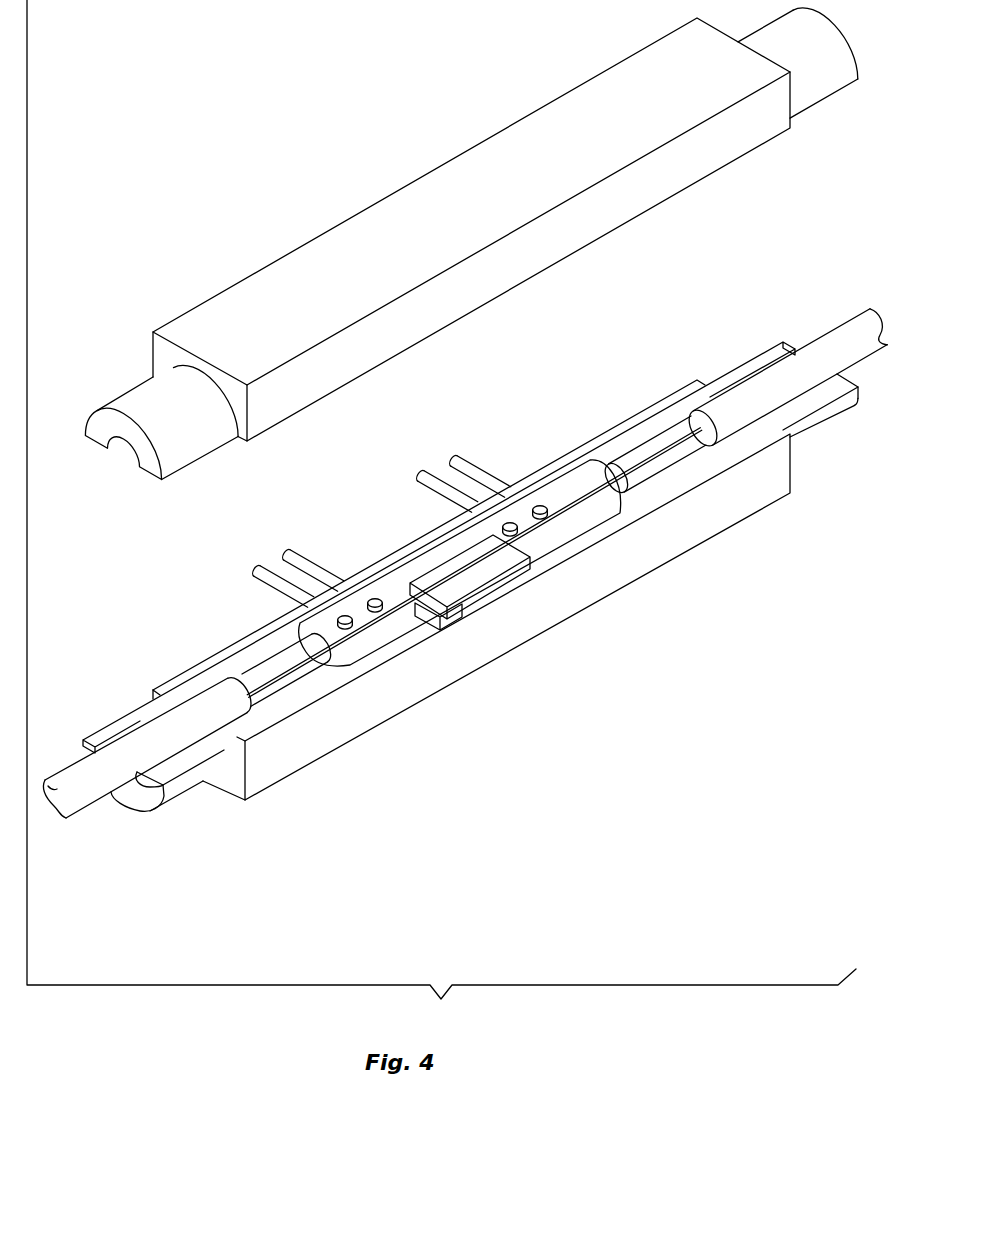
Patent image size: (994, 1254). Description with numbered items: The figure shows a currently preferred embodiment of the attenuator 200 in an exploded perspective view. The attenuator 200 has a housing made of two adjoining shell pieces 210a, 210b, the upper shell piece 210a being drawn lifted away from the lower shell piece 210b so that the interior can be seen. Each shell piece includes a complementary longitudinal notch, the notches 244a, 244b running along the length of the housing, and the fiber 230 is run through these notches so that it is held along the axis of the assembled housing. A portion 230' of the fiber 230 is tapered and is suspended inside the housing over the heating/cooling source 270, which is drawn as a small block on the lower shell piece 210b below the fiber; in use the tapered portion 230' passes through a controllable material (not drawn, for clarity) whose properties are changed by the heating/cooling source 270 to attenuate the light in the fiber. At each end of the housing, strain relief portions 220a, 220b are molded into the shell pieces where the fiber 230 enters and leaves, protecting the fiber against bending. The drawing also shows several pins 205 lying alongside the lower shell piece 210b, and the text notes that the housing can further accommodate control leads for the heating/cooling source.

The attenuator 200 is at (636, 742).
The alignment pins 205 is at (450, 457).
The shell piece 210a is at (641, 203).
The shell piece 210b is at (640, 570).
The strain relief portion 220a is at (187, 790).
The strain relief portion 220b is at (820, 425).
The fiber 230 is at (465, 628).
The tapered portion of fiber 230' is at (474, 580).
The longitudinal notch 244a is at (262, 665).
The longitudinal notch 244b is at (640, 445).
The heating/cooling source 270 is at (445, 565).